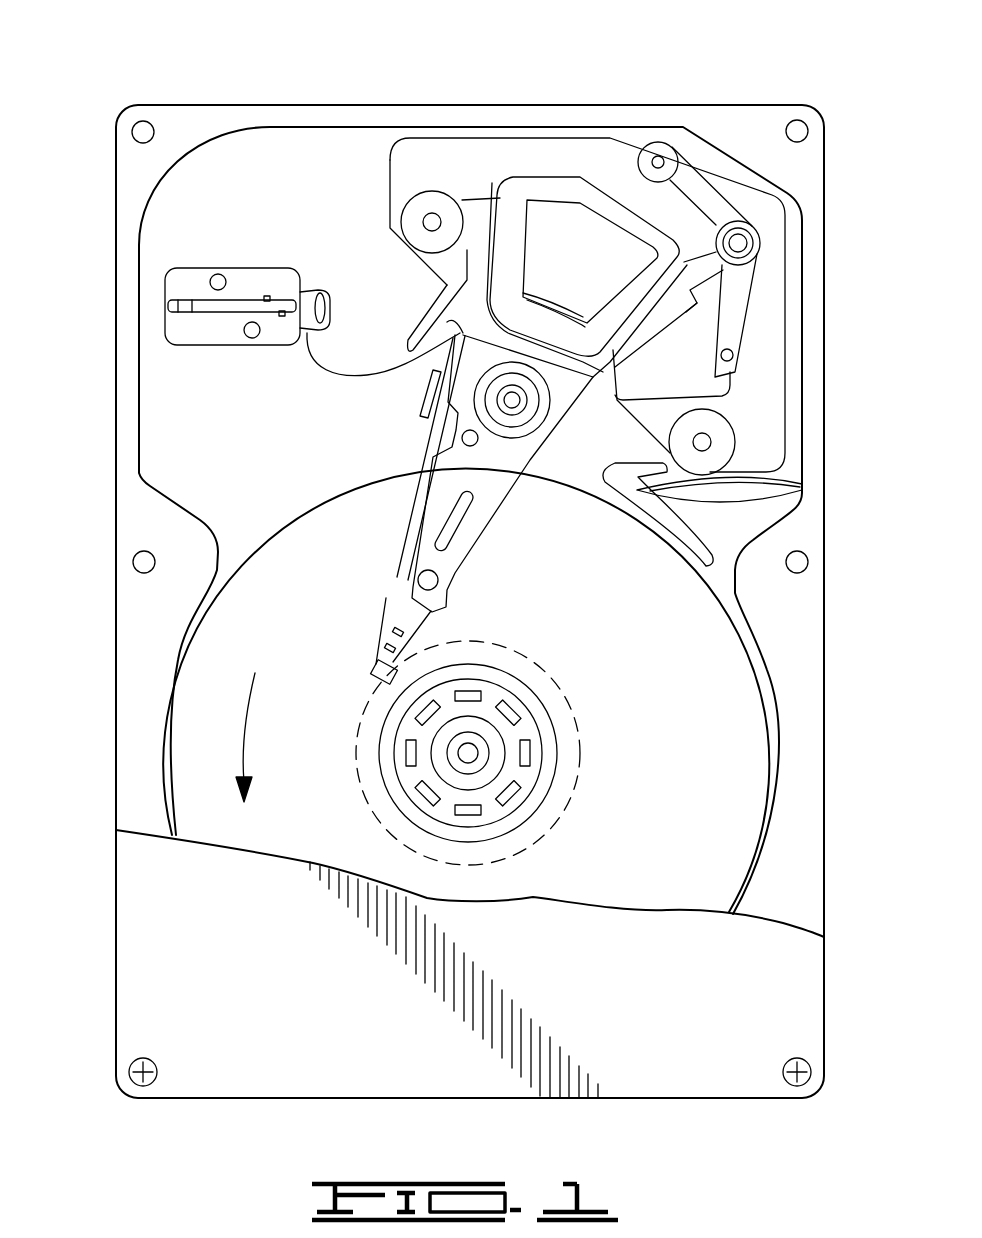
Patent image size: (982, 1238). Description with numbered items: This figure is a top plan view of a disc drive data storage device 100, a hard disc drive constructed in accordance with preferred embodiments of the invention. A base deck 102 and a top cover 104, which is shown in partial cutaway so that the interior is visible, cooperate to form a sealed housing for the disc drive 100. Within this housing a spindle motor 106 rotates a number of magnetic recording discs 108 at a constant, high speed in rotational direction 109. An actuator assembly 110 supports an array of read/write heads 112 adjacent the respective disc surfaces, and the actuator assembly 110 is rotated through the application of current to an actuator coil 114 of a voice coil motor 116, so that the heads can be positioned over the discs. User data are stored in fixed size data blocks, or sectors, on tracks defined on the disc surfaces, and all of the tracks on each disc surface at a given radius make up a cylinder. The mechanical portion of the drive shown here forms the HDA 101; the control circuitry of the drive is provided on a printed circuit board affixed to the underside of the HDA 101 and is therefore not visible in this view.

The disc drive data storage device 100 is at (214, 56).
The HDA 101 is at (146, 166).
The base deck 102 is at (175, 422).
The top cover 104 is at (167, 907).
The spindle motor 106 is at (506, 740).
The magnetic recording discs 108 is at (737, 762).
The rotational direction 109 is at (244, 731).
The actuator assembly 110 is at (482, 481).
The read/write heads 112 is at (376, 670).
The actuator coil 114 is at (540, 182).
The voice coil motor 116 is at (599, 150).